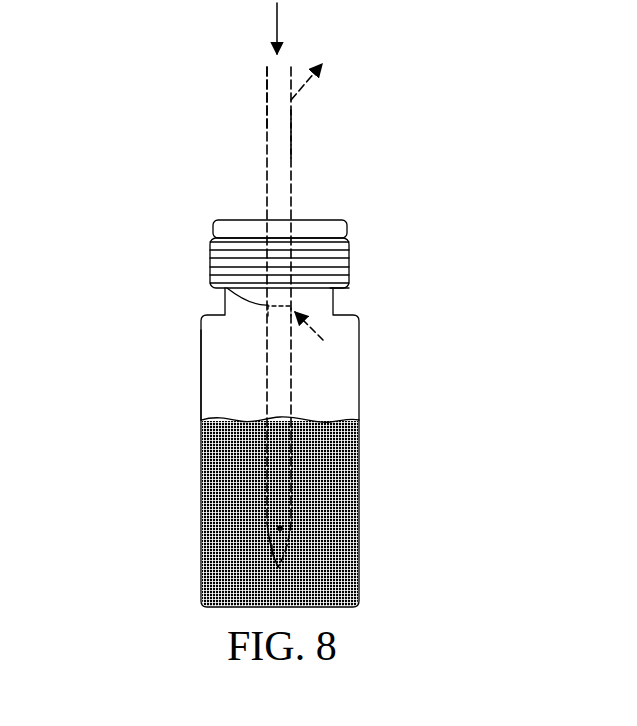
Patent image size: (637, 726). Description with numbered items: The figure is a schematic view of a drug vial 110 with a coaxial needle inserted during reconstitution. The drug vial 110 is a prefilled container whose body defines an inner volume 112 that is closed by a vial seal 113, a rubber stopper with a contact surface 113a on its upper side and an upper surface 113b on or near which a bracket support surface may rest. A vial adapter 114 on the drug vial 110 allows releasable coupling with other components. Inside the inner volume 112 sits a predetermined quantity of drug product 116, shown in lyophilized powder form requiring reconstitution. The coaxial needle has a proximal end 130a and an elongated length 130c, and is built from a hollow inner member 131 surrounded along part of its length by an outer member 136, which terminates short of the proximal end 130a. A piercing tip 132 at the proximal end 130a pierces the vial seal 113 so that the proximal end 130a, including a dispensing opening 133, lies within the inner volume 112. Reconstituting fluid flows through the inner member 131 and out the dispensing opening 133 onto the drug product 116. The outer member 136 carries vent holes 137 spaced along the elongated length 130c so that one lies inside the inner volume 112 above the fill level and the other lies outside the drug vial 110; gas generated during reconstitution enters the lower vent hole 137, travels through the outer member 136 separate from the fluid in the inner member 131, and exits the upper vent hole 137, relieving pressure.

The drug vial 110 is at (282, 447).
The inner volume 112 is at (359, 365).
The vial seal 113 is at (283, 256).
The contact surface 113a is at (338, 295).
The upper surface 113b is at (312, 230).
The vial adapter 114 is at (212, 254).
The drug product 116 is at (220, 487).
The proximal end 130a is at (264, 550).
The elongated length 130c is at (260, 152).
The inner member 131 is at (201, 392).
The piercing tip 132 is at (281, 556).
The dispensing opening 133 is at (283, 528).
The outer member 136 is at (292, 143).
The vent holes 137 is at (266, 112).